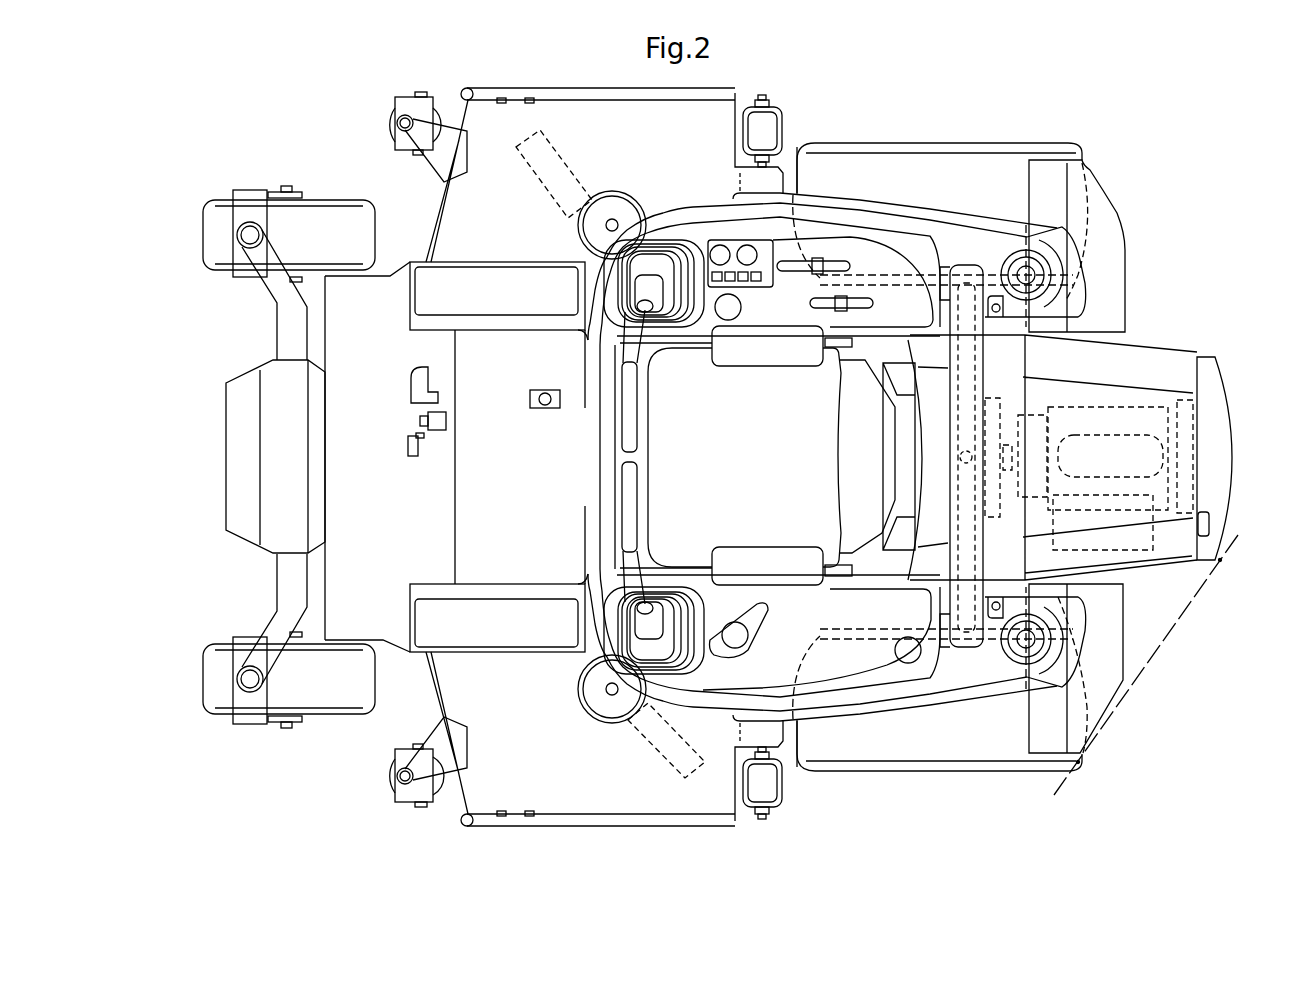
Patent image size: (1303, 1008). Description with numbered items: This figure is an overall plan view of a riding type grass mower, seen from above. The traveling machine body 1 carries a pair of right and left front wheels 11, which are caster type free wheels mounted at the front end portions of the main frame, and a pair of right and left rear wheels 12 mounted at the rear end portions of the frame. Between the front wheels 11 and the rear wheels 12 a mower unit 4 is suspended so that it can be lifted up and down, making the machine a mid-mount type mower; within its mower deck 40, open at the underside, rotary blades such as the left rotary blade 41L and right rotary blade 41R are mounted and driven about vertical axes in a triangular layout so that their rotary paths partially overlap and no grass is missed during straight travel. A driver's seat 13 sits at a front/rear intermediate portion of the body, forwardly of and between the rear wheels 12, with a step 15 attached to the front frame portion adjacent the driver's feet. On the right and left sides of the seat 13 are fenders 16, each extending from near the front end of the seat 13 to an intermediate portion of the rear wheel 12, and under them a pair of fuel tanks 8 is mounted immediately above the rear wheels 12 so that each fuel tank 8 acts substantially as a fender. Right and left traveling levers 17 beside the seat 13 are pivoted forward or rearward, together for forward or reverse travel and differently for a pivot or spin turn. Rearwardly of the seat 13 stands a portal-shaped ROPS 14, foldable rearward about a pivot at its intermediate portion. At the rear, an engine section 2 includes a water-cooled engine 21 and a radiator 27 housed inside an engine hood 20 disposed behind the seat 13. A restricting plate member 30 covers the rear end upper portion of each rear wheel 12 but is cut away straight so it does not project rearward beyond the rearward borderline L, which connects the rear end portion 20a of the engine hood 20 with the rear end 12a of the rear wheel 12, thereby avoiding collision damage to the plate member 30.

The traveling machine body 1 is at (694, 485).
The engine section 2 is at (1101, 476).
The mower unit 4 is at (560, 792).
The fuel tank 8 is at (927, 207).
The front wheel 11 is at (203, 236).
The rear wheel 12 is at (937, 148).
The rear end of rear wheel 12a is at (1078, 764).
The driver's seat 13 is at (770, 527).
The ROPS 14 is at (966, 290).
The step 15 is at (490, 565).
The fender 16 is at (703, 213).
The traveling lever 17 is at (622, 480).
The engine hood 20 is at (1215, 456).
The rear end portion of engine hood 20a is at (1220, 560).
The water-cooled engine 21 is at (1160, 368).
The radiator 27 is at (945, 480).
The restricting plate member 30 is at (1127, 262).
The mower deck 40 is at (440, 692).
The right rotary blade 41R is at (545, 182).
The left rotary blade 41L is at (658, 748).
The rearward borderline L is at (1132, 687).